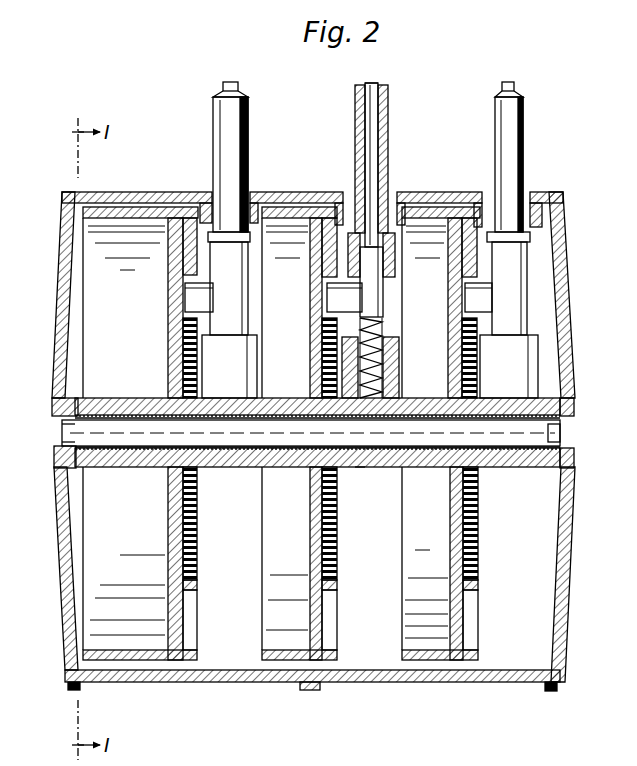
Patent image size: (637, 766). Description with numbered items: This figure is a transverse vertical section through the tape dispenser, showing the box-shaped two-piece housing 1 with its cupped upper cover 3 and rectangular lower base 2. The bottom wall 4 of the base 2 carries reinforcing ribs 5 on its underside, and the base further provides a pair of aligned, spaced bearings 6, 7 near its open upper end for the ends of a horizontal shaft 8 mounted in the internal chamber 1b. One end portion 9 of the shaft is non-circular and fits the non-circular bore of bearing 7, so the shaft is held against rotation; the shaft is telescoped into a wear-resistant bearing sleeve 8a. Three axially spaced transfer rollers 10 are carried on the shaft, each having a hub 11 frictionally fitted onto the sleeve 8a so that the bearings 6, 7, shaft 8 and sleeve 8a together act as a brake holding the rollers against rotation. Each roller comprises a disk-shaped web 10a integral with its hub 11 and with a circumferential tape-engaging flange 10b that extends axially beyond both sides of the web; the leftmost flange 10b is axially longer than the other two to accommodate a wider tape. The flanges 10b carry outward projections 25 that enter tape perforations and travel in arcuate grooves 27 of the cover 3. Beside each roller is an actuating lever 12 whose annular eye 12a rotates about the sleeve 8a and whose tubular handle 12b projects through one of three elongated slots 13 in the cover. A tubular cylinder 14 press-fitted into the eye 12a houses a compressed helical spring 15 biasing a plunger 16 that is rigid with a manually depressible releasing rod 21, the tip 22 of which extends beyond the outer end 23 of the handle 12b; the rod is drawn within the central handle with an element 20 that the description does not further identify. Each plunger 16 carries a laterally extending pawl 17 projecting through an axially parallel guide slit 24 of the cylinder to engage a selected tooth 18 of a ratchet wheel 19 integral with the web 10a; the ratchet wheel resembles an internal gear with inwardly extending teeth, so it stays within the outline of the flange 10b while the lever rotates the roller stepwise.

The housing 1 is at (46, 278).
The internal chamber 1b is at (382, 649).
The base 2 is at (60, 532).
The cover 3 is at (560, 236).
The bottom wall 4 is at (372, 684).
The reinforcing ribs 5 is at (68, 690).
The bearing 6 is at (58, 456).
The bearing 7 is at (560, 408).
The shaft 8 is at (510, 466).
The bearing sleeve 8a is at (422, 470).
The end portion of shaft 9 is at (556, 434).
The roller 10 is at (271, 589).
The web 10a is at (308, 518).
The flange 10b is at (104, 648).
The hub 11 is at (126, 470).
The actuating lever 12 is at (387, 240).
The eye 12a is at (360, 468).
The handle 12b is at (515, 170).
The slot 13 is at (254, 205).
The cylinder 14 is at (384, 288).
The helical spring 15 is at (384, 326).
The plunger 16 is at (383, 276).
The pawl 17 is at (320, 299).
The tooth 18 is at (196, 572).
The ratchet wheel 19 is at (196, 586).
The inner rod 20 is at (366, 146).
The releasing rod 21 is at (389, 128).
The tip 22 is at (378, 86).
The outer end of handle 23 is at (517, 95).
The guide slit 24 is at (332, 336).
The projections 25 is at (432, 206).
The arcuate groove 27 is at (146, 205).